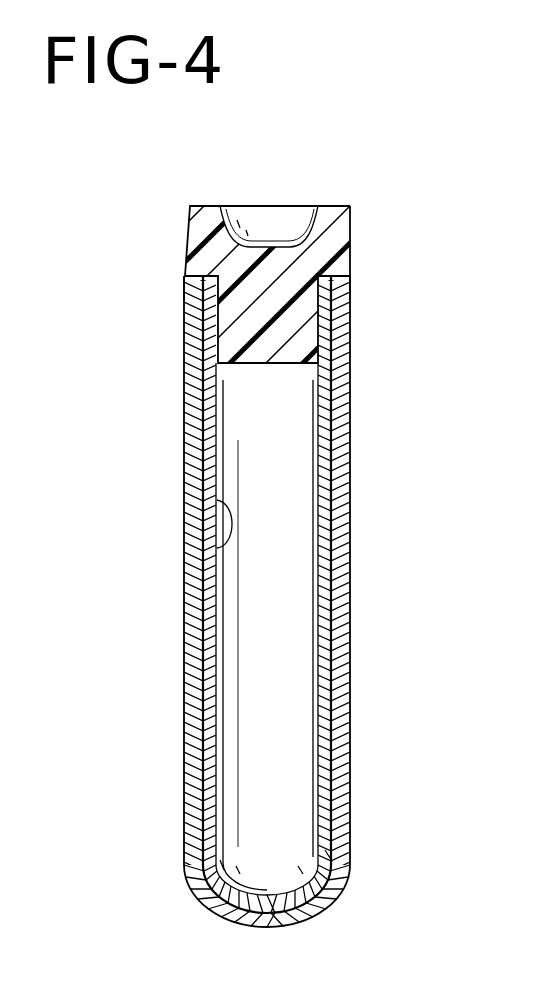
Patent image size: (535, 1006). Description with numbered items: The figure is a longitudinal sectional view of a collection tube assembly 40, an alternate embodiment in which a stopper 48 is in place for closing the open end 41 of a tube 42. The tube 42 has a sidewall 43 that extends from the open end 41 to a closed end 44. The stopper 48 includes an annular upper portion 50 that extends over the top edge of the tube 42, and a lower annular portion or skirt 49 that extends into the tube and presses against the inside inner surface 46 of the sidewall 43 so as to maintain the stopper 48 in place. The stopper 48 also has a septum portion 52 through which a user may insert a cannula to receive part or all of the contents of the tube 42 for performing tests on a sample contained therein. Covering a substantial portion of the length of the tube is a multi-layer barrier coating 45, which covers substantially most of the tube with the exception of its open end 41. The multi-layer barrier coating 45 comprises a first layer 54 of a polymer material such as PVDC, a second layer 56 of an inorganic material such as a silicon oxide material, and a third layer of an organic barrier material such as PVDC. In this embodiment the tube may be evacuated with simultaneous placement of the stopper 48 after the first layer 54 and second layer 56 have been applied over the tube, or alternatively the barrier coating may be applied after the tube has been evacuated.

The collection tube assembly 40 is at (402, 174).
The open end 41 is at (187, 295).
The tube 42 is at (288, 553).
The sidewall 43 is at (208, 445).
The closed end 44 is at (262, 922).
The multi-layer barrier coating 45 is at (193, 585).
The inner surface 46 is at (216, 547).
The stopper 48 is at (190, 207).
The lower annular portion or skirt 49 is at (308, 338).
The annular upper portion 50 is at (352, 262).
The septum portion 52 is at (273, 248).
The first layer 54 is at (192, 774).
The second layer 56 is at (187, 828).